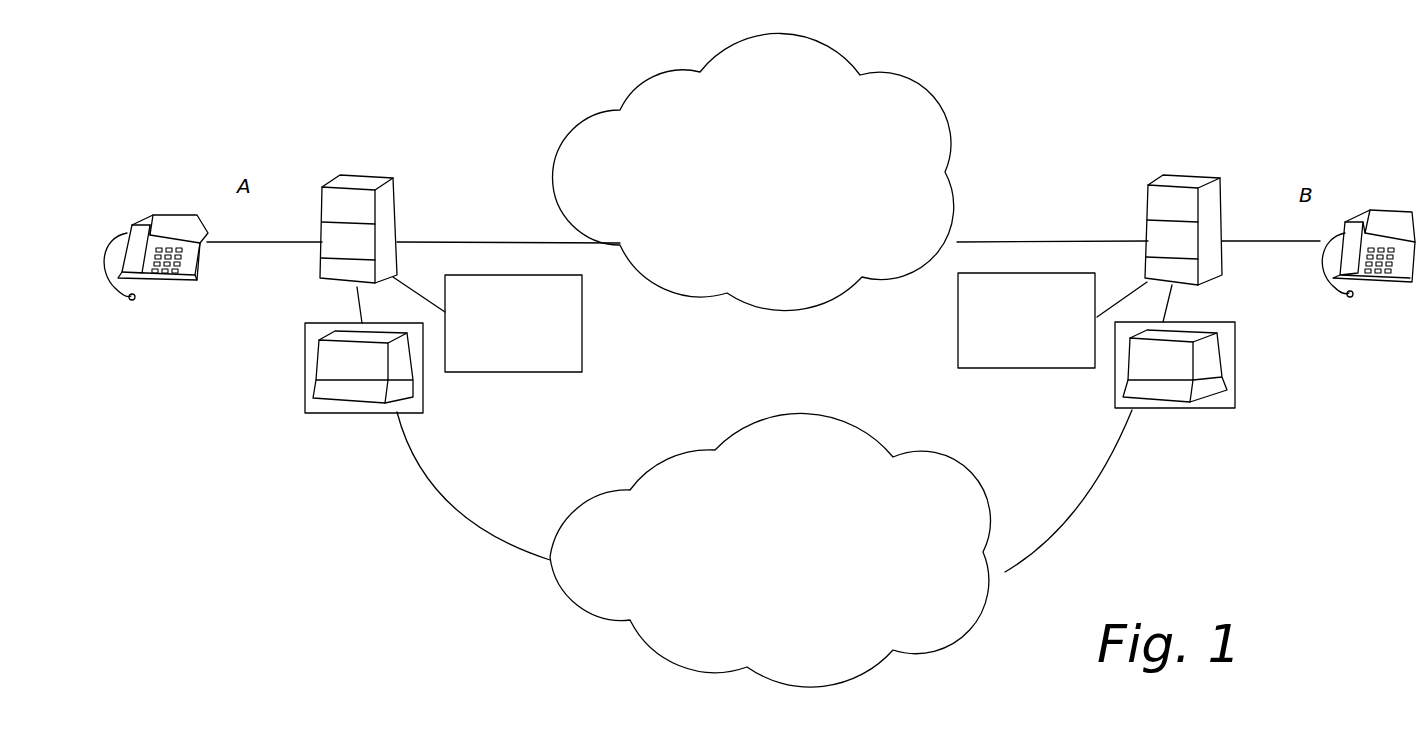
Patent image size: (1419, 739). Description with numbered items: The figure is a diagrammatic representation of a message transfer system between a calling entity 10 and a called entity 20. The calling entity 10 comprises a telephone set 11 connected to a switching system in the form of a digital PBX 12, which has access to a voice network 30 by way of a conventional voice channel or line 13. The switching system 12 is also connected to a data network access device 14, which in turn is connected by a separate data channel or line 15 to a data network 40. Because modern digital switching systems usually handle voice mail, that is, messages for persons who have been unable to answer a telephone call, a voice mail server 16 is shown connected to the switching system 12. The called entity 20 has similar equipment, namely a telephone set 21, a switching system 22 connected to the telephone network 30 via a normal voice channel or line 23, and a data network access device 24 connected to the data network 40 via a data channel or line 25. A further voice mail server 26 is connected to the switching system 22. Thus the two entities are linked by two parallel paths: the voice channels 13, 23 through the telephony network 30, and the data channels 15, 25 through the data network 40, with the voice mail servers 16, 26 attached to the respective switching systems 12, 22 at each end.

The calling entity 10 is at (295, 158).
The telephone set 11 is at (172, 212).
The digital PBX 12 is at (393, 207).
The voice channel or line 13 is at (497, 242).
The data network access device 14 is at (305, 352).
The data channel or line 15 is at (457, 490).
The voice mail server 16 is at (582, 337).
The called entity 20 is at (1265, 178).
The telephone set 21 is at (1390, 282).
The switching system 22 is at (1150, 198).
The voice channel or line 23 is at (1032, 238).
The data network access device 24 is at (1235, 387).
The data channel or line 25 is at (1073, 512).
The voice mail server 26 is at (1047, 368).
The voice network 30 is at (873, 72).
The data network 40 is at (867, 432).